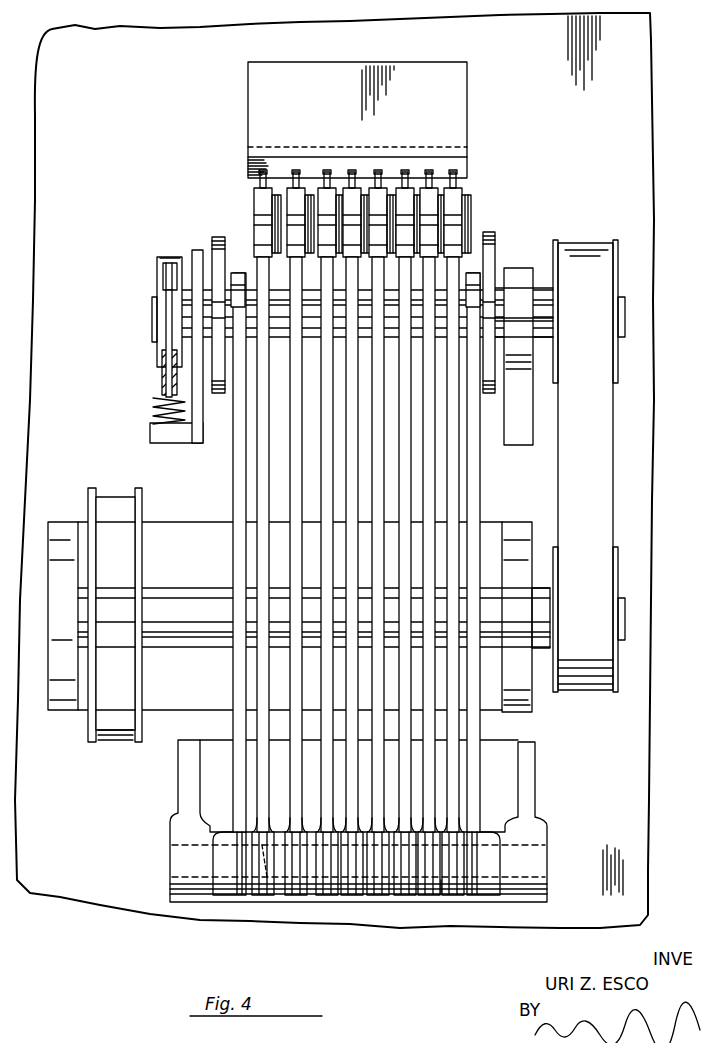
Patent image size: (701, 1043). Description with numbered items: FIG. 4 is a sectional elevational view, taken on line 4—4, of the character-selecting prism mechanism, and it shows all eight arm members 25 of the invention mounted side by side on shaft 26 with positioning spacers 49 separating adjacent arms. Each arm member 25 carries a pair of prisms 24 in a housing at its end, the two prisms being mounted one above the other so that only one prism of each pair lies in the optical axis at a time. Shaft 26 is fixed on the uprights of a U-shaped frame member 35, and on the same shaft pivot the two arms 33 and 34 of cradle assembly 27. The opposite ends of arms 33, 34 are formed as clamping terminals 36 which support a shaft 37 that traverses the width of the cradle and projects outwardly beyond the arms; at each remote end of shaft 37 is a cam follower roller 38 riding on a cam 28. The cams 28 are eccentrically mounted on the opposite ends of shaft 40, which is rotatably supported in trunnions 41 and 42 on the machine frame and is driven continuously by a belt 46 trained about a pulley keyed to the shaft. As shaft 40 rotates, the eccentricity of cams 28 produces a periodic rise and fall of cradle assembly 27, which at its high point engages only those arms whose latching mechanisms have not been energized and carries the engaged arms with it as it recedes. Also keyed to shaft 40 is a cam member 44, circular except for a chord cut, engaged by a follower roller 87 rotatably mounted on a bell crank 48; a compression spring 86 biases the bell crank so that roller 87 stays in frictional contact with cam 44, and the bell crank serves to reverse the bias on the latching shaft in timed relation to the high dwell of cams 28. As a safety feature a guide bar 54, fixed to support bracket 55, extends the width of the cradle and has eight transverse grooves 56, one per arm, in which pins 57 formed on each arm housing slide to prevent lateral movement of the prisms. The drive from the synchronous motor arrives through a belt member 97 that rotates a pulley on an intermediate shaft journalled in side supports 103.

The machine 4 is at (632, 441).
The prisms 24 is at (465, 192).
The arm member 25 is at (297, 460).
The shaft 26 is at (267, 877).
The cradle assembly 27 is at (231, 495).
The cams 28 is at (222, 395).
The arm 33 is at (237, 688).
The arm 34 is at (475, 693).
The U-shaped frame member 35 is at (178, 795).
The clamping terminal 36 is at (236, 273).
The shaft 37 is at (277, 307).
The cam follower rollers 38 is at (490, 303).
The shaft 40 is at (154, 312).
The trunnion 41 is at (520, 290).
The trunnion 42 is at (198, 252).
The cam member 44 is at (162, 290).
The belt 46 is at (585, 413).
The bell crank 48 is at (170, 318).
The positioning spacers 49 is at (441, 893).
The guide bar 54 is at (403, 165).
The support bracket 55 is at (383, 150).
The transverse grooves 56 is at (250, 166).
The pin 57 is at (266, 176).
The compression spring 86 is at (160, 405).
The follower roller 87 is at (168, 262).
The belt member 97 is at (120, 713).
The side supports 103 is at (510, 537).